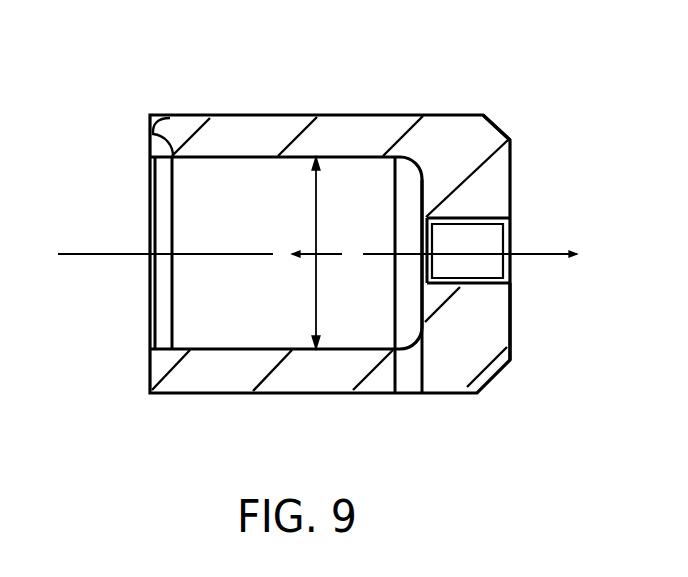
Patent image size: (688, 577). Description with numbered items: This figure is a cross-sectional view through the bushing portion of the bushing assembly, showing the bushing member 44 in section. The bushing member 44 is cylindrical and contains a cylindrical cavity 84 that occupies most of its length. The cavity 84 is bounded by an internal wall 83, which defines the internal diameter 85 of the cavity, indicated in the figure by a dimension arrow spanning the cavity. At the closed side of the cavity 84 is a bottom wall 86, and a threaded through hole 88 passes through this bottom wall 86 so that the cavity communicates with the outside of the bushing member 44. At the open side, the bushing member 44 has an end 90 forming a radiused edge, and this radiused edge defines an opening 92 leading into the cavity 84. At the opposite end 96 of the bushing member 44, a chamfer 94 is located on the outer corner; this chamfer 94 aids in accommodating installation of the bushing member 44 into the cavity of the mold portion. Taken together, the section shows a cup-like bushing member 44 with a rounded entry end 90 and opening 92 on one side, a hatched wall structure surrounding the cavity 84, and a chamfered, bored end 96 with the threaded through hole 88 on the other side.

The bushing member 44 is at (368, 108).
The internal wall 83 is at (240, 318).
The cylindrical cavity 84 is at (238, 187).
The internal diameter 85 is at (317, 210).
The bottom wall 86 is at (450, 320).
The threaded through hole 88 is at (470, 240).
The end 90 is at (150, 137).
The opening 92 is at (150, 213).
The chamfer 94 is at (493, 123).
The opposite end 96 is at (513, 307).